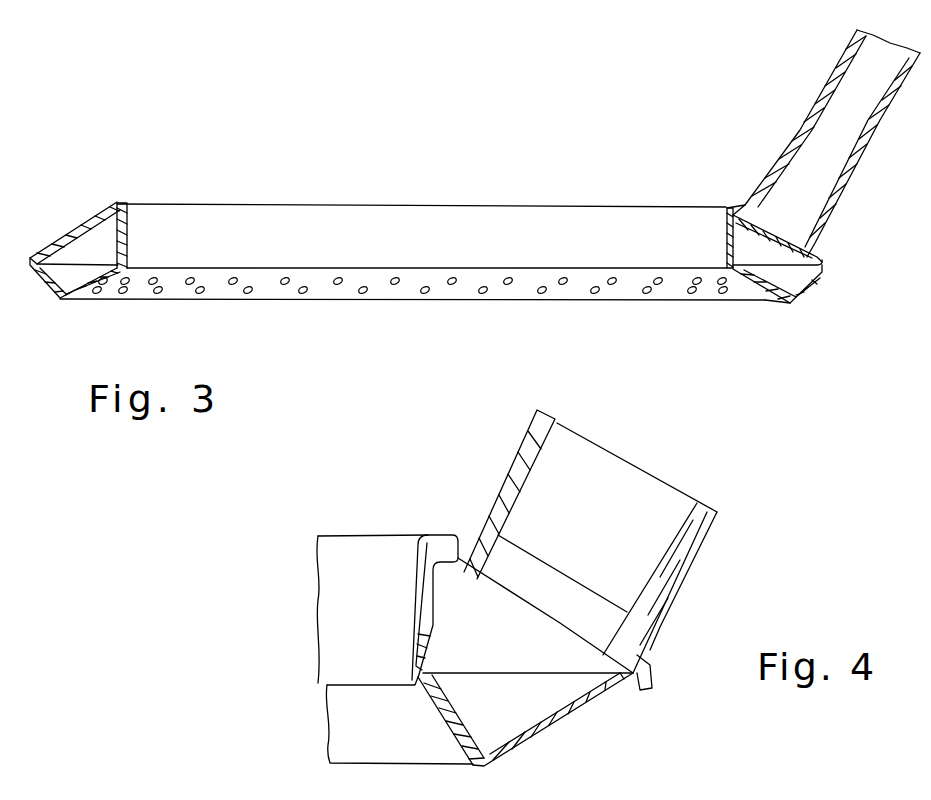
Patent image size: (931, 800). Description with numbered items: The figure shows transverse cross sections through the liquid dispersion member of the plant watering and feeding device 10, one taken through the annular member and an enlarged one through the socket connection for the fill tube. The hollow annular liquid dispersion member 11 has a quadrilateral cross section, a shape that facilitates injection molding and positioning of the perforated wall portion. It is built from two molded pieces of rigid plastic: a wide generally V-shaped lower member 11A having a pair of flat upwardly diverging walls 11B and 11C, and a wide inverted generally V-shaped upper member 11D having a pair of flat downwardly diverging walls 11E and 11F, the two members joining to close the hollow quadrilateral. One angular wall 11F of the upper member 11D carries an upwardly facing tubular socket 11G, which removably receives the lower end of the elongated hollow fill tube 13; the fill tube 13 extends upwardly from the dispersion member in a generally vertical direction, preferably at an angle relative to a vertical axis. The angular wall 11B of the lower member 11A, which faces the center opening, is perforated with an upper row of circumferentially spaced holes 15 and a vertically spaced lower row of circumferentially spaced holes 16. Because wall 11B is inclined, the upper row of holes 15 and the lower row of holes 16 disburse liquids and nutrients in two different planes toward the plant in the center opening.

In FIG. 3, the plant watering and feeding device 10 is at (658, 88).
In FIG. 3, the liquid dispersion member 11 is at (277, 202).
In FIG. 4, the liquid dispersion member 11 is at (366, 532).
In FIG. 3, the lower member 11A is at (318, 303).
In FIG. 4, the lower member 11A is at (410, 738).
In FIG. 3, the angular wall 11B is at (773, 286).
In FIG. 4, the angular wall 11B is at (450, 710).
In FIG. 3, the angular wall 11C is at (808, 288).
In FIG. 4, the angular wall 11C is at (545, 735).
In FIG. 3, the upper member 11D is at (393, 205).
In FIG. 4, the upper member 11D is at (386, 623).
In FIG. 3, the angular wall 11E is at (128, 240).
In FIG. 4, the angular wall 11E is at (435, 618).
In FIG. 3, the angular wall 11F is at (60, 235).
In FIG. 4, the angular wall 11F is at (642, 654).
In FIG. 3, the tubular socket 11G is at (772, 152).
In FIG. 4, the tubular socket 11G is at (505, 471).
In FIG. 3, the fill tube 13 is at (838, 60).
In FIG. 3, the upper row of holes 15 is at (338, 278).
In FIG. 3, the lower row of holes 16 is at (540, 292).